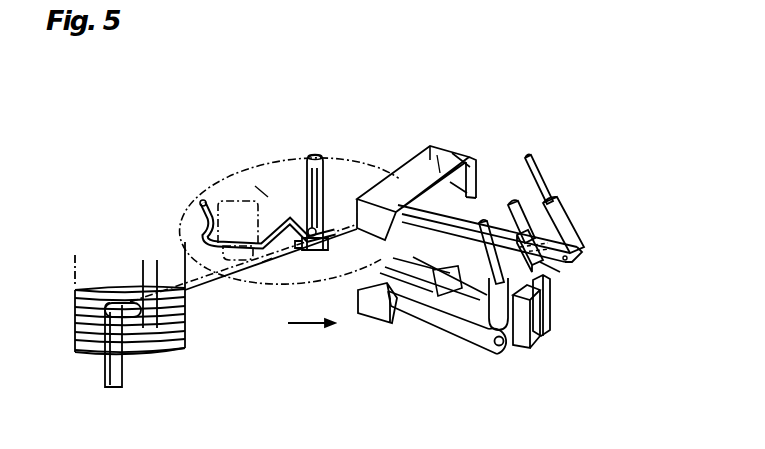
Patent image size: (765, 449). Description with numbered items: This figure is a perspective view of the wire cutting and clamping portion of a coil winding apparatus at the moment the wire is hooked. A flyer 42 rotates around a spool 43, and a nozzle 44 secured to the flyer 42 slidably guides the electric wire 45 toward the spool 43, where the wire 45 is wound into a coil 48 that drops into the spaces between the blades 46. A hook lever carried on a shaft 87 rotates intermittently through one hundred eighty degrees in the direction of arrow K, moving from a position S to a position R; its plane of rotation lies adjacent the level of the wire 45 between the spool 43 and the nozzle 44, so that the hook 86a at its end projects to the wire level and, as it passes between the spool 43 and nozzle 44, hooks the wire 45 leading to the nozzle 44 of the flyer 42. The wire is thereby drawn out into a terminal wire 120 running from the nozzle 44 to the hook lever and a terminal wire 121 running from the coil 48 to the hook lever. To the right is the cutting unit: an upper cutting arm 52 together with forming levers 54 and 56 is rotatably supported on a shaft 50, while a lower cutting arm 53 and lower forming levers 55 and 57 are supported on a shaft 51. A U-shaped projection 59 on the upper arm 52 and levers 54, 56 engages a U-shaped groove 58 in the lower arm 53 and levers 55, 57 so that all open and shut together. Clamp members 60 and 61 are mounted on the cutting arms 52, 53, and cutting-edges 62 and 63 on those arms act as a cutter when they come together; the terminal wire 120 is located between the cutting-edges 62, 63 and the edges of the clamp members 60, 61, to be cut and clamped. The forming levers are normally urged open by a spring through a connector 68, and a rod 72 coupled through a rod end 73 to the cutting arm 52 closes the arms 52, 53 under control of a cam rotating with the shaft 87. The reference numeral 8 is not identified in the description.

The frame 8 is at (262, 190).
The flyer 42 is at (228, 205).
The spool 43 is at (185, 275).
The nozzle 44 is at (236, 262).
The electric wire 45 is at (203, 275).
The blades 46 is at (118, 373).
The coil 48 is at (112, 303).
The shaft 50 is at (551, 200).
The shaft 51 is at (499, 352).
The cutting arm 52 is at (563, 262).
The cutting arm 53 is at (545, 325).
The forming lever 54 is at (471, 238).
The forming lever 55 is at (447, 320).
The forming lever 56 is at (488, 222).
The forming lever 57 is at (537, 345).
The U-shaped groove 58 is at (495, 328).
The U-shaped projection 59 is at (507, 350).
The clamp member 60 is at (407, 177).
The clamp member 61 is at (398, 307).
The cutting-edge 62 is at (437, 214).
The cutting-edge 63 is at (377, 190).
The connector 68 is at (557, 277).
The rod 72 is at (535, 158).
The rod end 73 is at (572, 235).
The hook 86a is at (200, 200).
The shaft 87 is at (303, 180).
The terminal wire 120 is at (313, 243).
The terminal wire 121 is at (266, 248).
The position S is at (203, 205).
The position R is at (420, 200).
The direction of arrow K is at (311, 311).